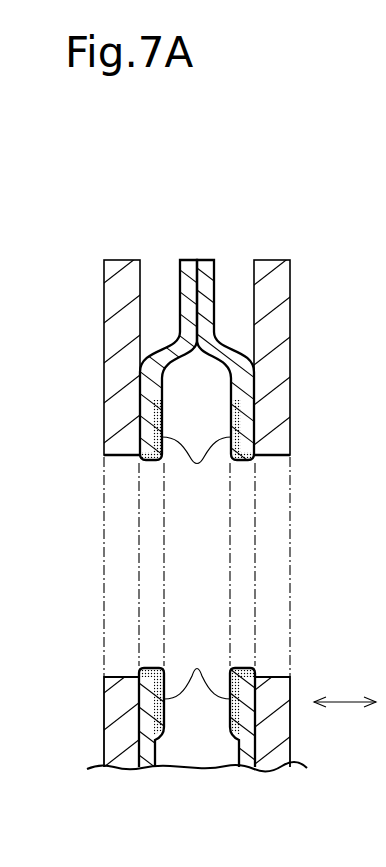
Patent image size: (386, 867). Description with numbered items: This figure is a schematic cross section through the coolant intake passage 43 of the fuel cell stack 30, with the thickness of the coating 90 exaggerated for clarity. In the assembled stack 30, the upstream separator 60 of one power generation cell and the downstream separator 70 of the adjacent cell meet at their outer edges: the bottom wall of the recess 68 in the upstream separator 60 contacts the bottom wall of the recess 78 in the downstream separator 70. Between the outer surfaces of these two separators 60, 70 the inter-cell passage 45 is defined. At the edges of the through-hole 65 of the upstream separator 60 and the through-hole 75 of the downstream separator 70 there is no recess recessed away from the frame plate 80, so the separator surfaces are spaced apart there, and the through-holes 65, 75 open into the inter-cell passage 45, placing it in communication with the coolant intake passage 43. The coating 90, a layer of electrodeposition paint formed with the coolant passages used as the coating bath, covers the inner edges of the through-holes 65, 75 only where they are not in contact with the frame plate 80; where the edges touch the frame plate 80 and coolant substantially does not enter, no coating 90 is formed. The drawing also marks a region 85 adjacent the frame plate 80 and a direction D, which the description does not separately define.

The fuel cell stack 30 is at (87, 625).
The coolant intake passage 43 is at (197, 570).
The inter-cell passage 45 is at (197, 737).
The upstream separator 60 is at (236, 347).
The through-hole 65 is at (244, 463).
The recess 68 is at (213, 272).
The downstream separator 70 is at (160, 349).
The through-hole 75 is at (150, 463).
The recess 78 is at (181, 272).
The frame plate 80 is at (125, 260).
The wall end face 85 is at (121, 458).
The coating 90 is at (196, 568).
The width direction D is at (345, 700).